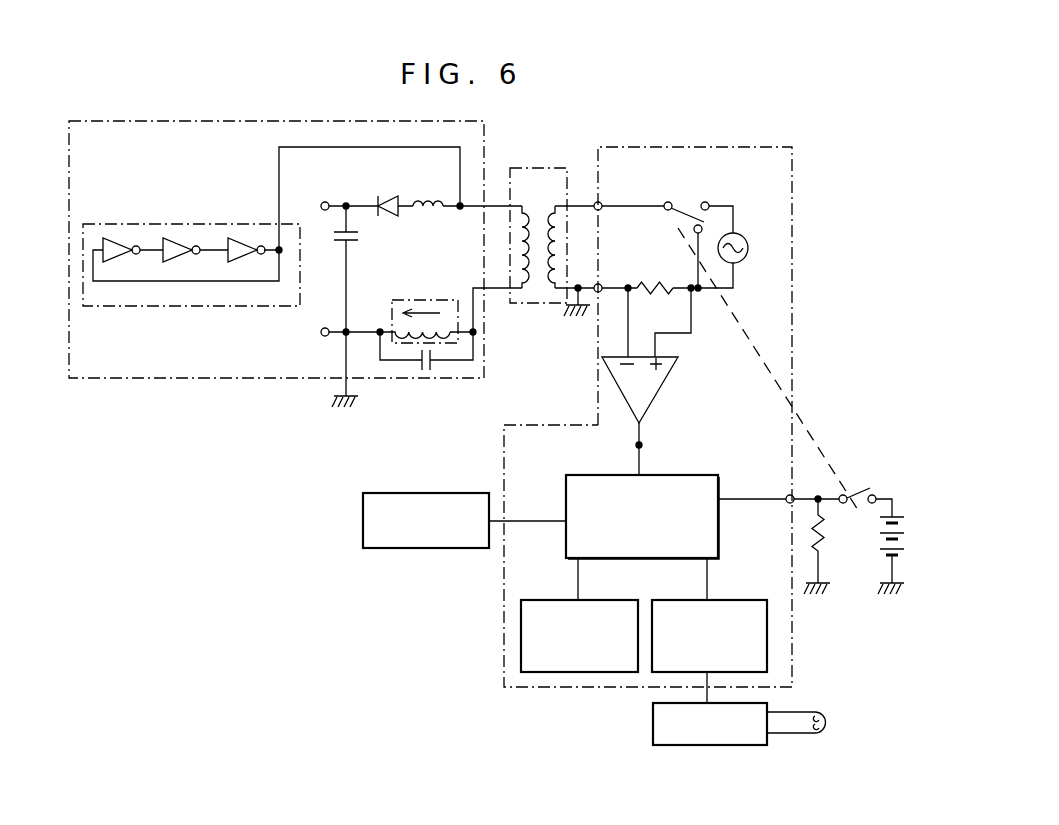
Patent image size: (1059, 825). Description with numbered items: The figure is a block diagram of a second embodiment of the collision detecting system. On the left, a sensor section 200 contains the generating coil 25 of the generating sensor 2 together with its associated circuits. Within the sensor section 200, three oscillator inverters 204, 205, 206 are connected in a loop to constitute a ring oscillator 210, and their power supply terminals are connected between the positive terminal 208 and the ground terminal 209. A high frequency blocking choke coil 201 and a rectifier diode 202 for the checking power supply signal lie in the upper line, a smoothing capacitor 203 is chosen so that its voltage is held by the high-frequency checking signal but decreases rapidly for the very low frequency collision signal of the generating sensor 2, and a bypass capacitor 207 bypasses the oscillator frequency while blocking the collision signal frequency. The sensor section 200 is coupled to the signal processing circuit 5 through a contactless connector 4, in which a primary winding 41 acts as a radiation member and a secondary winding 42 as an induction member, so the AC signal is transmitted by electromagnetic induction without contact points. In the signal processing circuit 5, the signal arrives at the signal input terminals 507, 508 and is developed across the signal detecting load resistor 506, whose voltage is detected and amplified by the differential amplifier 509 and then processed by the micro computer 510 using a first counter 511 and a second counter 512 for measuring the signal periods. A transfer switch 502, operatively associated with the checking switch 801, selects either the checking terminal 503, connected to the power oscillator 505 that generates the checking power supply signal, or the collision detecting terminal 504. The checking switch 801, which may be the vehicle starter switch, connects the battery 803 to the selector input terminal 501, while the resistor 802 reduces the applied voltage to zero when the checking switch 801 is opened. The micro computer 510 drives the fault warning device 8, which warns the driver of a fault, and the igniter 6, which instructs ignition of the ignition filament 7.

The sensor section 200 is at (182, 121).
The ring oscillator 210 is at (150, 306).
The oscillator inverter 204 is at (240, 233).
The oscillator inverter 205 is at (172, 233).
The oscillator inverter 206 is at (108, 233).
The high frequency blocking choke coil 201 is at (428, 204).
The rectifier diode 202 is at (386, 197).
The smoothing capacitor 203 is at (358, 236).
The bypass capacitor 207 is at (427, 373).
The power supply terminal 208 is at (321, 206).
The power supply terminal 209 is at (322, 332).
The generating coil 25 is at (395, 332).
The generating sensor 2 is at (425, 300).
The contactless connector 4 is at (538, 202).
The primary winding 41 is at (520, 205).
The secondary winding 42 is at (557, 205).
The signal processing circuit 5 is at (738, 145).
The selector input terminal 501 is at (786, 498).
The transfer switch 502 is at (690, 212).
The checking terminal 503 is at (710, 205).
The collision detecting terminal 504 is at (696, 249).
The power oscillator 505 is at (740, 264).
The signal detecting load resistor 506 is at (654, 292).
The signal input terminal 507 is at (600, 204).
The signal input terminal 508 is at (583, 308).
The differential amplifier 509 is at (660, 388).
The micro computer 510 is at (596, 476).
The first counter 511 is at (554, 598).
The second counter 512 is at (725, 598).
The igniter 6 is at (652, 723).
The ignition filament 7 is at (827, 718).
The fault warning device 8 is at (420, 550).
The checking switch 801 is at (861, 491).
The resistor 802 is at (822, 519).
The battery 803 is at (878, 562).